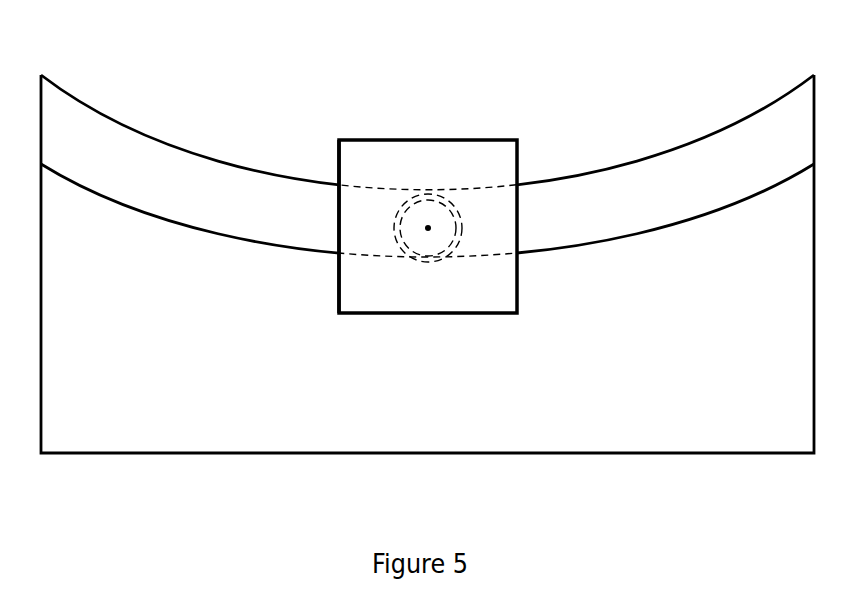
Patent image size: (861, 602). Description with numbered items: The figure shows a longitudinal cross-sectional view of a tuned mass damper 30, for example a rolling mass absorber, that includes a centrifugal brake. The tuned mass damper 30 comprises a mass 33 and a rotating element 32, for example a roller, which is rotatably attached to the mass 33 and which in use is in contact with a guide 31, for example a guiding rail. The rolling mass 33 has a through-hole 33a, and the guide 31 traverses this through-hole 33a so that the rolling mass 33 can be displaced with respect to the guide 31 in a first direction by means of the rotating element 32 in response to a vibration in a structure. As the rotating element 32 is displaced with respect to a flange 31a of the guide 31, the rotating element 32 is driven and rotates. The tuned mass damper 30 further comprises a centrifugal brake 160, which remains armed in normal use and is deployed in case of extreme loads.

The tuned mass damper 30 is at (608, 78).
The guide 31 is at (127, 145).
The flange 31a is at (183, 228).
The mass 33 is at (478, 138).
The through-hole 33a is at (340, 198).
The rotating element 32 is at (457, 243).
The centrifugal brake 160 is at (427, 257).